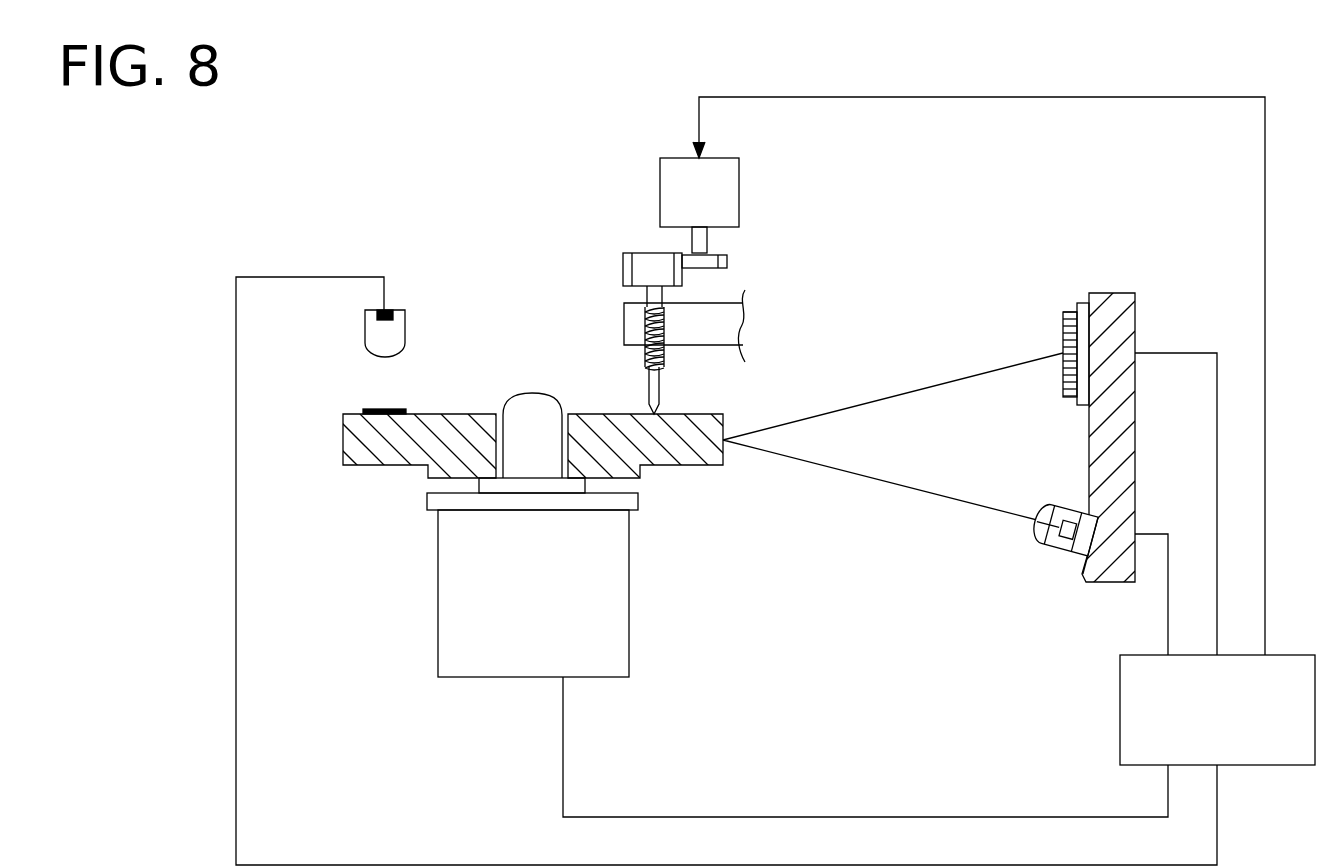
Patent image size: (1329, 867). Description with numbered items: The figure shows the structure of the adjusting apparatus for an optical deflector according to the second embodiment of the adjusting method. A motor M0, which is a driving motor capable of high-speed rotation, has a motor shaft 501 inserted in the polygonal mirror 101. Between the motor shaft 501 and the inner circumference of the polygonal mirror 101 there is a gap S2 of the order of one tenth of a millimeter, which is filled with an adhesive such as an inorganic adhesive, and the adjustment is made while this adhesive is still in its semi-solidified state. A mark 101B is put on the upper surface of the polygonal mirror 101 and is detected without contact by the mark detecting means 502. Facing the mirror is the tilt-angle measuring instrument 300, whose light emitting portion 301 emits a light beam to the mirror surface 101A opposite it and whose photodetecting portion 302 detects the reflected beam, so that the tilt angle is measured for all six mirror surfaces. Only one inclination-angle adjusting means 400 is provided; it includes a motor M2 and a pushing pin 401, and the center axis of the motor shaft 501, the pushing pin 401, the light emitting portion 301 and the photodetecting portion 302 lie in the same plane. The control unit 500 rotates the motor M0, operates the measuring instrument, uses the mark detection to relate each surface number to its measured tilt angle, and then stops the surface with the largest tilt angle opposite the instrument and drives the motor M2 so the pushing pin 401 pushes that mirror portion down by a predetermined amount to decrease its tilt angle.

The polygonal mirror 101 is at (682, 455).
The mirror surface 101A is at (726, 418).
The mark 101B is at (384, 409).
The gap S2 is at (501, 413).
The motor shaft 501 is at (497, 385).
The mark detecting means 502 is at (392, 310).
The motor M0 is at (438, 570).
The inclination-angle adjusting means 400 is at (679, 286).
The pushing pin 401 is at (647, 385).
The motor M2 is at (739, 200).
The tilt-angle measuring instrument 300 is at (1010, 427).
The light emitting portion 301 is at (1045, 544).
The photodetecting portion 302 is at (1066, 312).
The control unit 500 is at (1120, 708).